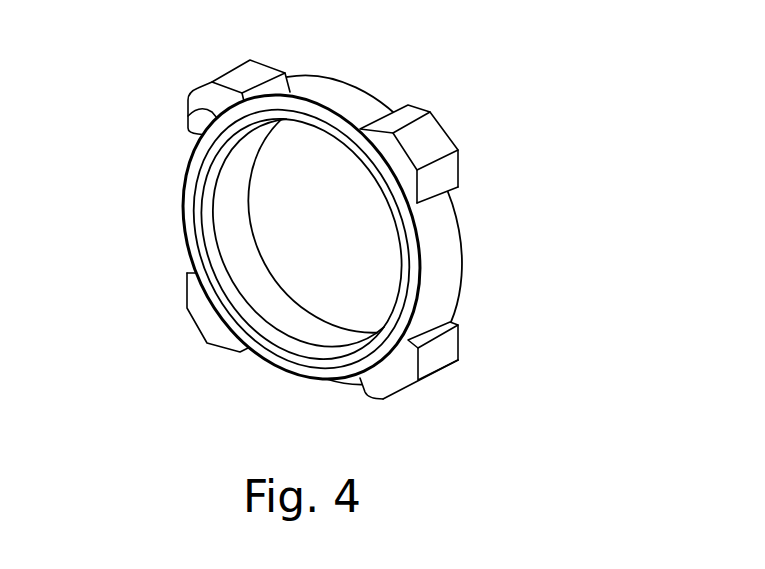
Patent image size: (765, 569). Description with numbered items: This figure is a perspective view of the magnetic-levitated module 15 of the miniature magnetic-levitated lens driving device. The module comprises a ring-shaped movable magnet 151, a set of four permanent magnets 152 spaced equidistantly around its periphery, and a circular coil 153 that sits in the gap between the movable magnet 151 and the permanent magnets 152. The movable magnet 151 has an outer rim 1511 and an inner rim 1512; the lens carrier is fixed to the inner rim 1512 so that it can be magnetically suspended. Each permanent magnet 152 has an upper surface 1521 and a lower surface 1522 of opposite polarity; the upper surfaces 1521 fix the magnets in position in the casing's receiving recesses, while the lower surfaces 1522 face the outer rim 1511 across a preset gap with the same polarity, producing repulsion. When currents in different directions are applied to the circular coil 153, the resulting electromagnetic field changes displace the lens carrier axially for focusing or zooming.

The magnetic-levitated module 15 is at (326, 216).
The movable magnet 151 is at (190, 222).
The outer rim 1511 is at (203, 238).
The inner rim 1512 is at (240, 255).
The permanent magnet 152 is at (320, 211).
The upper surface 1521 is at (200, 91).
The lower surface 1522 is at (189, 117).
The circular coil 153 is at (333, 88).